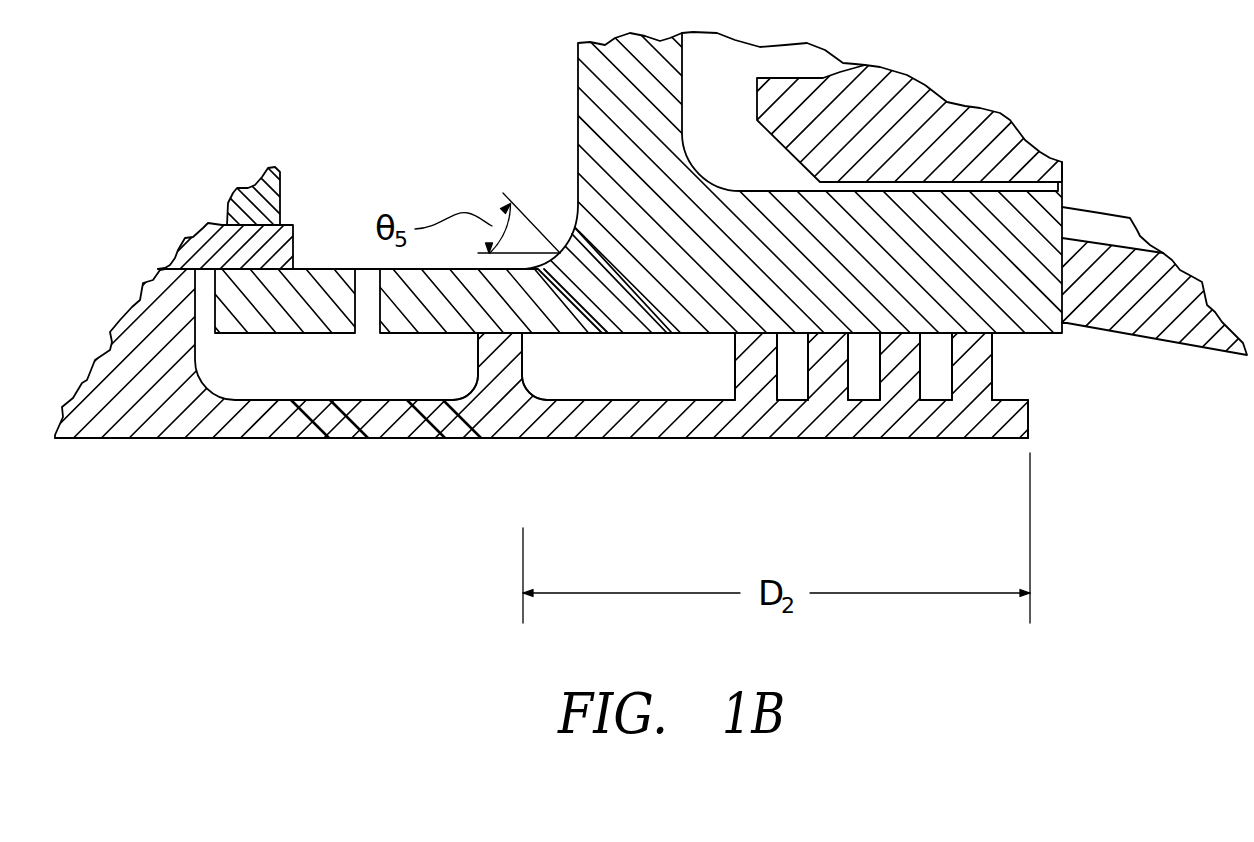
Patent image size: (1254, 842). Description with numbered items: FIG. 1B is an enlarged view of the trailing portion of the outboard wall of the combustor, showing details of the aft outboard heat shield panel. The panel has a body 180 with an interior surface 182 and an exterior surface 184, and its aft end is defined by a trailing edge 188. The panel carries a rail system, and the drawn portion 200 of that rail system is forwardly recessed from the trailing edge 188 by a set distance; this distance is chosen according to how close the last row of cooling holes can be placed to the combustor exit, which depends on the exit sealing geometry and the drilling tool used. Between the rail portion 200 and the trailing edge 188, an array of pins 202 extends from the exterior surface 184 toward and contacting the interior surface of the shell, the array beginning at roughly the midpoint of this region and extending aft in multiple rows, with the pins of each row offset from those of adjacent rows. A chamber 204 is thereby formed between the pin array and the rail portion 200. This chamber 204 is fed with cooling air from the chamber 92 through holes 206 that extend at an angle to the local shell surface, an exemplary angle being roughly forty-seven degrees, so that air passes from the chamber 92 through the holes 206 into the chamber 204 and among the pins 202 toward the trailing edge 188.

The chamber 92 is at (482, 155).
The body 180 is at (653, 439).
The interior surface 182 is at (770, 440).
The exterior surface 184 is at (605, 393).
The trailing edge 188 is at (1030, 420).
The rail portion 200 is at (503, 360).
The pins 202 is at (992, 360).
The chamber 204 is at (705, 363).
The holes 206 is at (598, 278).